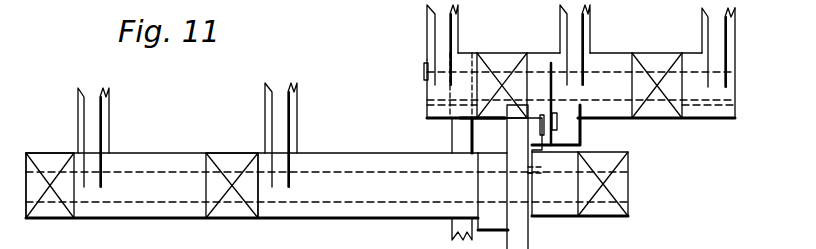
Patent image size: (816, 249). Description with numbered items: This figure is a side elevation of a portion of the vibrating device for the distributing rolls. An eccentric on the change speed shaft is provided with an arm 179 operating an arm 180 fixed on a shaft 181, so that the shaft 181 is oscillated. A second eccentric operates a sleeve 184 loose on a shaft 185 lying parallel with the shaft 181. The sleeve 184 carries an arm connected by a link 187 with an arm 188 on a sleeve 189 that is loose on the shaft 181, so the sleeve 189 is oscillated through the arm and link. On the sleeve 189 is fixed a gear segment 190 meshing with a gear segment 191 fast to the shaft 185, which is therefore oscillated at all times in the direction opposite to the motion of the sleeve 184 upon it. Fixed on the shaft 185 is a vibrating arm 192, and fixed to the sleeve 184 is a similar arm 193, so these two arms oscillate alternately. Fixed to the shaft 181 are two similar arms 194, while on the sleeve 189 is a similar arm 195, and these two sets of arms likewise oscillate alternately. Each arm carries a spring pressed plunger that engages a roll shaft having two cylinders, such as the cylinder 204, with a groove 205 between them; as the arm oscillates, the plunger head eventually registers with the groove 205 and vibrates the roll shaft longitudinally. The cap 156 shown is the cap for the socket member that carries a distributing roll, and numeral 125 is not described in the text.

The cap 156 is at (327, 201).
The arm 179 is at (452, 237).
The arm 180 is at (495, 201).
The shaft 181 is at (665, 103).
The sleeve 184 is at (438, 147).
The shaft 185 is at (608, 200).
The link 187 is at (520, 185).
The arm 188 is at (555, 92).
The sleeve 189 is at (617, 58).
The gear segment 190 is at (568, 121).
The gear segment 191 is at (567, 150).
The vibrating arm 192 is at (109, 124).
The arm 193 is at (283, 108).
The arms 194 is at (438, 33).
The arm 195 is at (567, 38).
The cylinder 204 is at (266, 201).
The groove 205 is at (221, 201).
The frame 125 is at (85, 220).